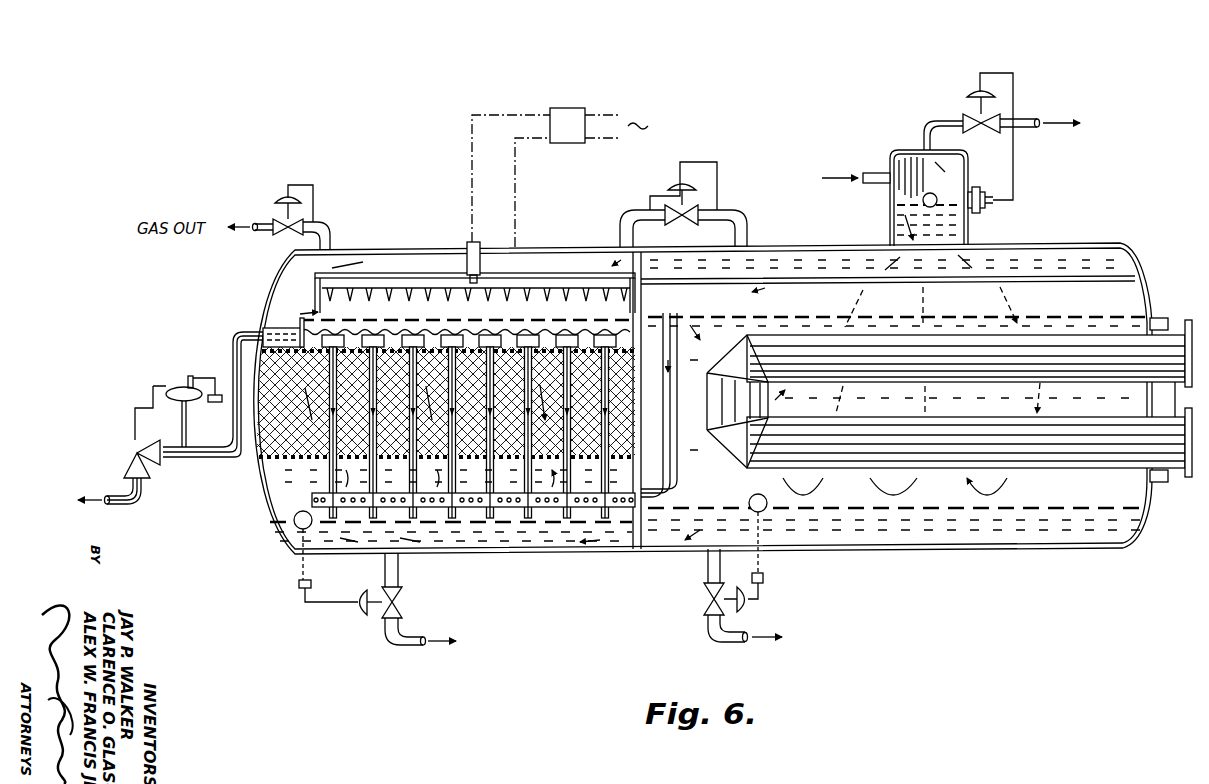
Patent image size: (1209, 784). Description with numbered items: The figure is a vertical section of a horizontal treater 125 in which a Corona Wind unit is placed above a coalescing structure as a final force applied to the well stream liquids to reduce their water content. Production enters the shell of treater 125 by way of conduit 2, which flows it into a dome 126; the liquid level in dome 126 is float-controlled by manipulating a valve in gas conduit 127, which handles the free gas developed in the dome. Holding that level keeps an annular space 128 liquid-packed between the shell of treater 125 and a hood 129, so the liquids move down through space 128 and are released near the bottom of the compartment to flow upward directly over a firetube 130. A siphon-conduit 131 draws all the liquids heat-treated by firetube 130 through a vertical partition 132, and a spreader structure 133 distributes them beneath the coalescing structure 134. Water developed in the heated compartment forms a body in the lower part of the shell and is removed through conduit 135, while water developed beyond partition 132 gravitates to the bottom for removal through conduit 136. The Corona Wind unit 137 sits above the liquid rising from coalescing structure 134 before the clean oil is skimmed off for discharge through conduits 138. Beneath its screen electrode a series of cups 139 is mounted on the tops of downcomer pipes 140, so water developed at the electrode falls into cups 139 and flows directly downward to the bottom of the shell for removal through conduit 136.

The conduit 2 is at (887, 172).
The treater 125 is at (1133, 256).
The dome 126 is at (968, 170).
The gas conduit 127 is at (1030, 120).
The annular space 128 is at (1077, 262).
The hood 129 is at (1120, 283).
The firetube 130 is at (949, 400).
The siphon-conduit 131 is at (680, 360).
The vertical partition 132 is at (642, 300).
The spreader structure 133 is at (588, 508).
The coalescing structure 134 is at (446, 402).
The conduit 135 is at (717, 645).
The conduit 136 is at (410, 637).
The Corona Wind unit 137 is at (425, 283).
The conduits 138 is at (173, 462).
The cups 139 is at (293, 330).
The downcomer pipes 140 is at (328, 475).